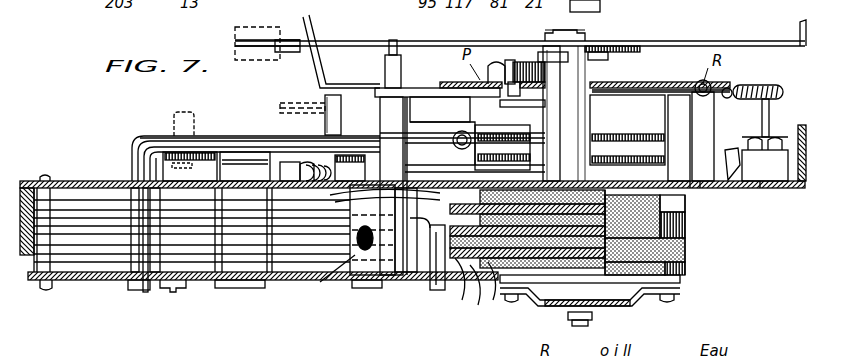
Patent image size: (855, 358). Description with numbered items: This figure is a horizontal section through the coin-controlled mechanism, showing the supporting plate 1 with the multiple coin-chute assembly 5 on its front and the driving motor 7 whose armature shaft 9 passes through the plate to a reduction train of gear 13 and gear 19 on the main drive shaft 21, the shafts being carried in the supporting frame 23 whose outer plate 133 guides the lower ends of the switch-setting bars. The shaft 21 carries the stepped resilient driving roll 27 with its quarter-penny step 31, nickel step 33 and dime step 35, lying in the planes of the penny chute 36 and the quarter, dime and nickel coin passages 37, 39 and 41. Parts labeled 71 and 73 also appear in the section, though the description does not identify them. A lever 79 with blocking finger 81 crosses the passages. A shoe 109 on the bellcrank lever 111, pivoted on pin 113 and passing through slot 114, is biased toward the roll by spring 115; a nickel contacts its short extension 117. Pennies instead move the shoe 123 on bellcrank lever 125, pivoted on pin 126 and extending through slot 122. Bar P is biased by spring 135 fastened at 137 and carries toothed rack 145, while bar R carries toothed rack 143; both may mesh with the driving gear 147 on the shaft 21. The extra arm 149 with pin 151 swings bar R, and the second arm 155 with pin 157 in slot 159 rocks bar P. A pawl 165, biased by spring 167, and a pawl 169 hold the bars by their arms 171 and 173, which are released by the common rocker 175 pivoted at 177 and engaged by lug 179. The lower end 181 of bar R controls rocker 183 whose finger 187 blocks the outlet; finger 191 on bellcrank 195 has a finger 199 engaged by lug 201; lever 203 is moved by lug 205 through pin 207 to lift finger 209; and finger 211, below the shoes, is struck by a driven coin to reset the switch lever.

The supporting plate 1 is at (112, 181).
The multiple coin-chute assembly 5 is at (118, 262).
The driving motor 7 is at (628, 0).
The armature shaft 9 is at (568, 8).
The gear 13 is at (680, 204).
The gear 19 is at (636, 134).
The main drive shaft 21 is at (559, 179).
The supporting frame 23 is at (385, 92).
The stepped resilient driving roll 27 is at (688, 278).
The quarter-penny step 31 is at (688, 232).
The nickel step 33 is at (655, 308).
The dime step 35 is at (688, 250).
The 1¢ chute 36 is at (352, 195).
The 25¢ coin passage 37 is at (542, 252).
The 10¢ coin passage 39 is at (525, 258).
The 5¢ coin passage 41 is at (527, 284).
The bracket leg 71 is at (150, 180).
The foot 73 is at (190, 285).
The lever 79 is at (445, 165).
The blocking finger 81 is at (520, 40).
The shoe 109 is at (325, 277).
The bellcrank lever 111 is at (372, 165).
The pin 113 is at (524, 62).
The slot 114 is at (355, 280).
The spring 115 is at (705, 186).
The short extension 117 is at (432, 282).
The slot 122 is at (400, 172).
The shoe 123 is at (378, 224).
The bellcrank lever 125 is at (388, 125).
The pin 126 is at (561, 113).
The outer plate 133 is at (432, 96).
The spring 135 is at (468, 134).
The fastening of spring 137 is at (465, 110).
The toothed rack 143 is at (680, 95).
The toothed rack 145 is at (520, 75).
The driving gear 147 is at (620, 50).
The extra arm 149 is at (593, 52).
The pin 151 is at (616, 88).
The second arm 155 is at (510, 135).
The pin 157 is at (498, 64).
The slot 159 is at (472, 82).
The pawl 165 is at (740, 90).
The spring 167 is at (762, 86).
The pawl 169 is at (388, 84).
The arm 171 is at (800, 22).
The arm 173 is at (341, 46).
The common rocker 175 is at (293, 33).
The pivot 177 is at (550, 52).
The lug 179 is at (236, 30).
The lower end of bar R 181 is at (698, 100).
The rocker 183 is at (282, 150).
The finger 187 is at (147, 300).
The finger 191 is at (237, 290).
The bellcrank 195 is at (243, 158).
The finger 199 is at (178, 154).
The lug 201 is at (184, 112).
The lever 203 is at (142, 140).
The lug 205 is at (285, 106).
The pin 207 is at (325, 100).
The finger 209 is at (134, 290).
The finger 211 is at (380, 288).